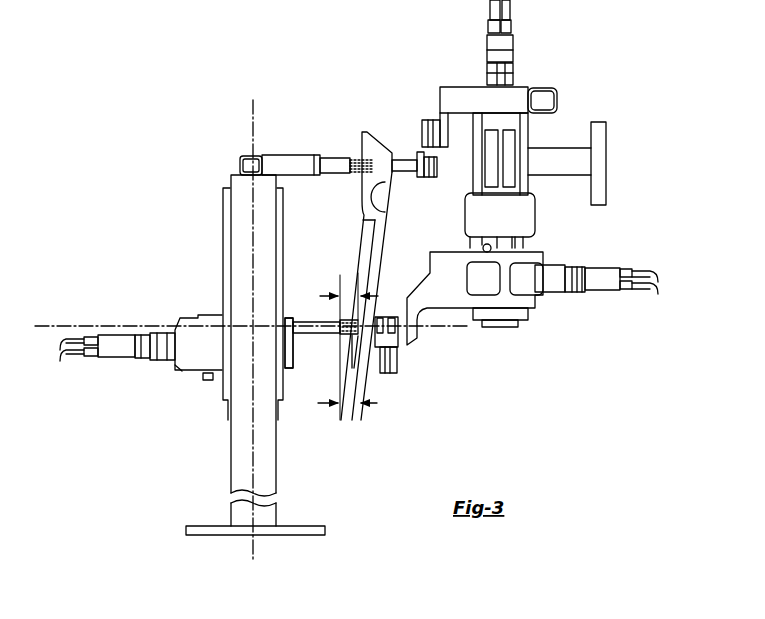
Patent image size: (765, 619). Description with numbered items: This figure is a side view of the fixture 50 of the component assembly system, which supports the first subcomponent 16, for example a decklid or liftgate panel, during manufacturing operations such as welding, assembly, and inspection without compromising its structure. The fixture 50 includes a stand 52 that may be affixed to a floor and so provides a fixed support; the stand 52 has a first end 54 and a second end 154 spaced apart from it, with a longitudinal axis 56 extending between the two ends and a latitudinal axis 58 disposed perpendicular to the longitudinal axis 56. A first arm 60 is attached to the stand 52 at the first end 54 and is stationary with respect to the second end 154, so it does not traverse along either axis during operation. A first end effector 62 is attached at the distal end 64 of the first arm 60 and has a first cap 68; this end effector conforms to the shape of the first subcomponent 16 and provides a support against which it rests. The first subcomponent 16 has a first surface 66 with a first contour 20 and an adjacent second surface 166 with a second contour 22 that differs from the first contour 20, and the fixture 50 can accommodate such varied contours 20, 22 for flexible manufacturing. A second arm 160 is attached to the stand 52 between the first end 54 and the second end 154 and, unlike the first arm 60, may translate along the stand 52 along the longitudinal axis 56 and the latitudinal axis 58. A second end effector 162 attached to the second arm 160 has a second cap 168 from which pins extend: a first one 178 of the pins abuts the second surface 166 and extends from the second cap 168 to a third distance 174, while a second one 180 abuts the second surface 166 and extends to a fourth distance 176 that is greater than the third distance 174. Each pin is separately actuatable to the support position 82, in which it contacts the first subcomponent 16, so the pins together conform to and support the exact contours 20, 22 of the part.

The fixture 50 is at (134, 161).
The stand 52 is at (232, 471).
The first end 54 is at (199, 193).
The longitudinal axis 56 is at (250, 125).
The latitudinal axis 58 is at (433, 332).
The first arm 60 is at (242, 166).
The first end effector 62 is at (285, 153).
The distal end 64 is at (239, 155).
The first surface 66 is at (350, 183).
The first cap 68 is at (337, 178).
The first subcomponent 16 is at (377, 148).
The first contour 20 is at (352, 150).
The second contour 22 is at (350, 340).
The support position 82 is at (389, 404).
The second end 154 is at (145, 522).
The second arm 160 is at (200, 360).
The second end effector 162 is at (290, 316).
The second surface 166 is at (353, 265).
The second cap 168 is at (306, 335).
The third distance 174 is at (348, 357).
The fourth distance 176 is at (372, 278).
The first one of the second plurality of pins 178 is at (358, 349).
The second one of the second plurality of pins 180 is at (380, 306).